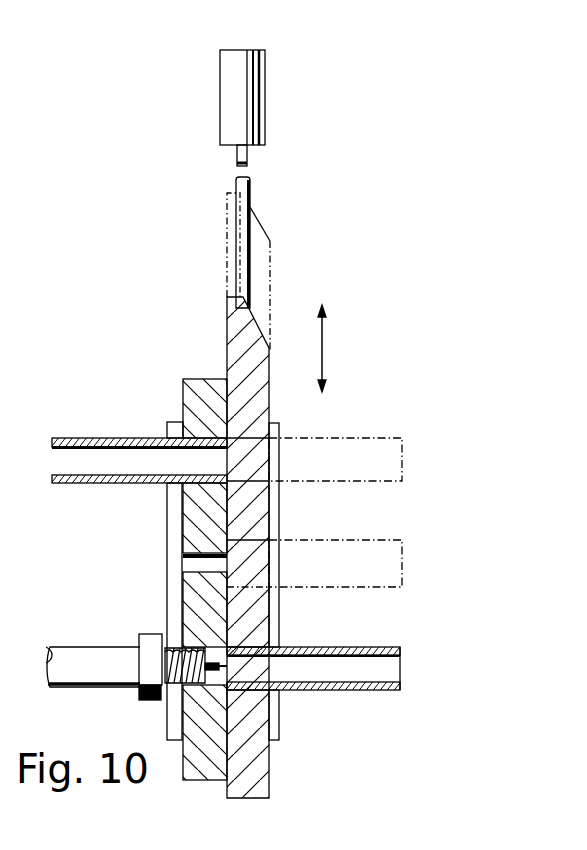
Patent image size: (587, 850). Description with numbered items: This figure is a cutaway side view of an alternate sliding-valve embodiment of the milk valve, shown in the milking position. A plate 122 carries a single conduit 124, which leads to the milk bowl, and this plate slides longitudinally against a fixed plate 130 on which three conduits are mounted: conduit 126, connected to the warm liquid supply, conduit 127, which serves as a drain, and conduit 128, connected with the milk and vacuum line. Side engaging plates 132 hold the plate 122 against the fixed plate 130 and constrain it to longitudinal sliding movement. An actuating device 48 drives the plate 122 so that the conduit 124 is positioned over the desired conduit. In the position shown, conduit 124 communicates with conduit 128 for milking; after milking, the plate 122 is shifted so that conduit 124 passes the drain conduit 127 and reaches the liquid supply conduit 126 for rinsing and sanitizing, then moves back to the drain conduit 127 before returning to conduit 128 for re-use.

The actuating device 48 is at (212, 84).
The plate 122 is at (227, 221).
The conduit 124 is at (373, 540).
The conduit 126 is at (118, 437).
The conduit 127 is at (188, 565).
The conduit 128 is at (82, 648).
The fixed plate 130 is at (203, 379).
The side engaging plates 132 is at (172, 422).